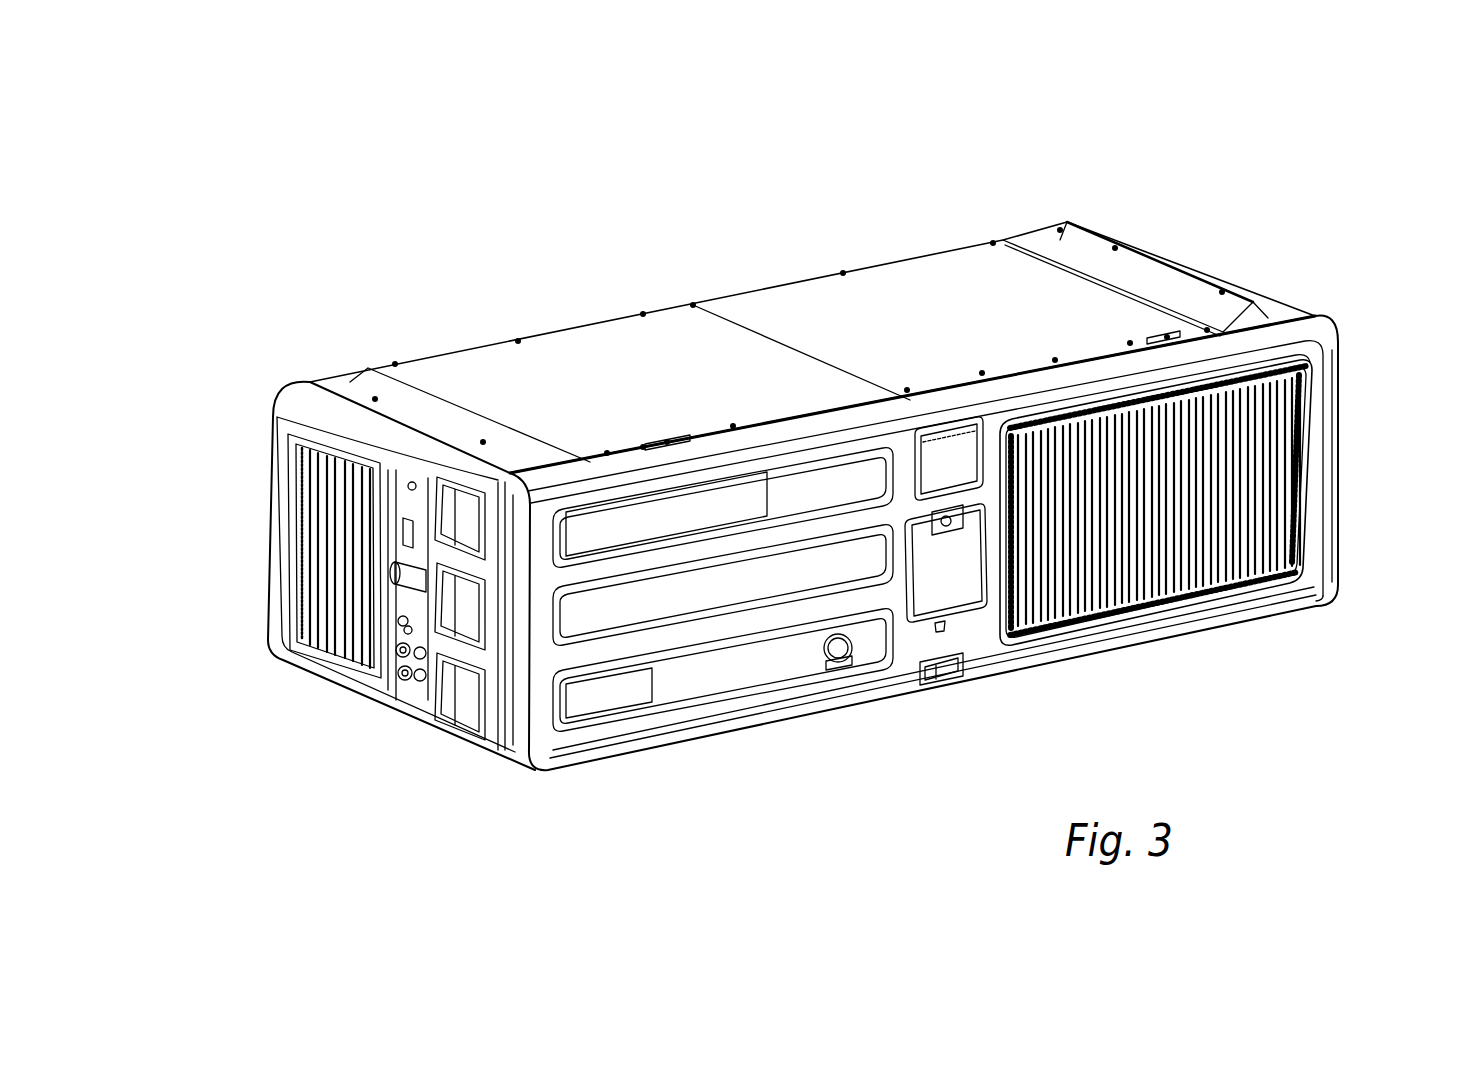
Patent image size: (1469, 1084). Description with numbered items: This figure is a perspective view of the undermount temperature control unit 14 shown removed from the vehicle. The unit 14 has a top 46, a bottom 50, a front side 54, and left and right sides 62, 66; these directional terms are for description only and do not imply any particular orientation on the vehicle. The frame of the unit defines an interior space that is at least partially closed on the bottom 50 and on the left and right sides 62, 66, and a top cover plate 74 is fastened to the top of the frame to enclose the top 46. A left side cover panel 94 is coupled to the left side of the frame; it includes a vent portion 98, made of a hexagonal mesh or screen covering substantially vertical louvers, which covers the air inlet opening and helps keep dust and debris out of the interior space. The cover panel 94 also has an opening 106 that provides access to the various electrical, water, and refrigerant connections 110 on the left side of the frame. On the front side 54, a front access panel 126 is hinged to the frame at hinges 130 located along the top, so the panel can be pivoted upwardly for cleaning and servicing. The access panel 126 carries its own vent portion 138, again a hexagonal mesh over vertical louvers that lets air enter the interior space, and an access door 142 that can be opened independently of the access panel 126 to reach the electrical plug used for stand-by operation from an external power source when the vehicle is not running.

The undermount temperature control unit 14 is at (488, 230).
The top 46 is at (955, 288).
The top cover plate 74 is at (676, 392).
The hinges 130 is at (660, 437).
The opening 106 is at (398, 463).
The left side 62 is at (441, 751).
The left side cover panel 94 is at (280, 487).
The vent portion 98 is at (300, 648).
The electrical, water, and refrigerant connections 110 is at (385, 680).
The front side 54 is at (703, 675).
The bottom 50 is at (792, 728).
The access door 142 is at (962, 587).
The front access panel 126 is at (907, 672).
The vent portion 138 is at (1253, 563).
The right side 66 is at (1346, 453).